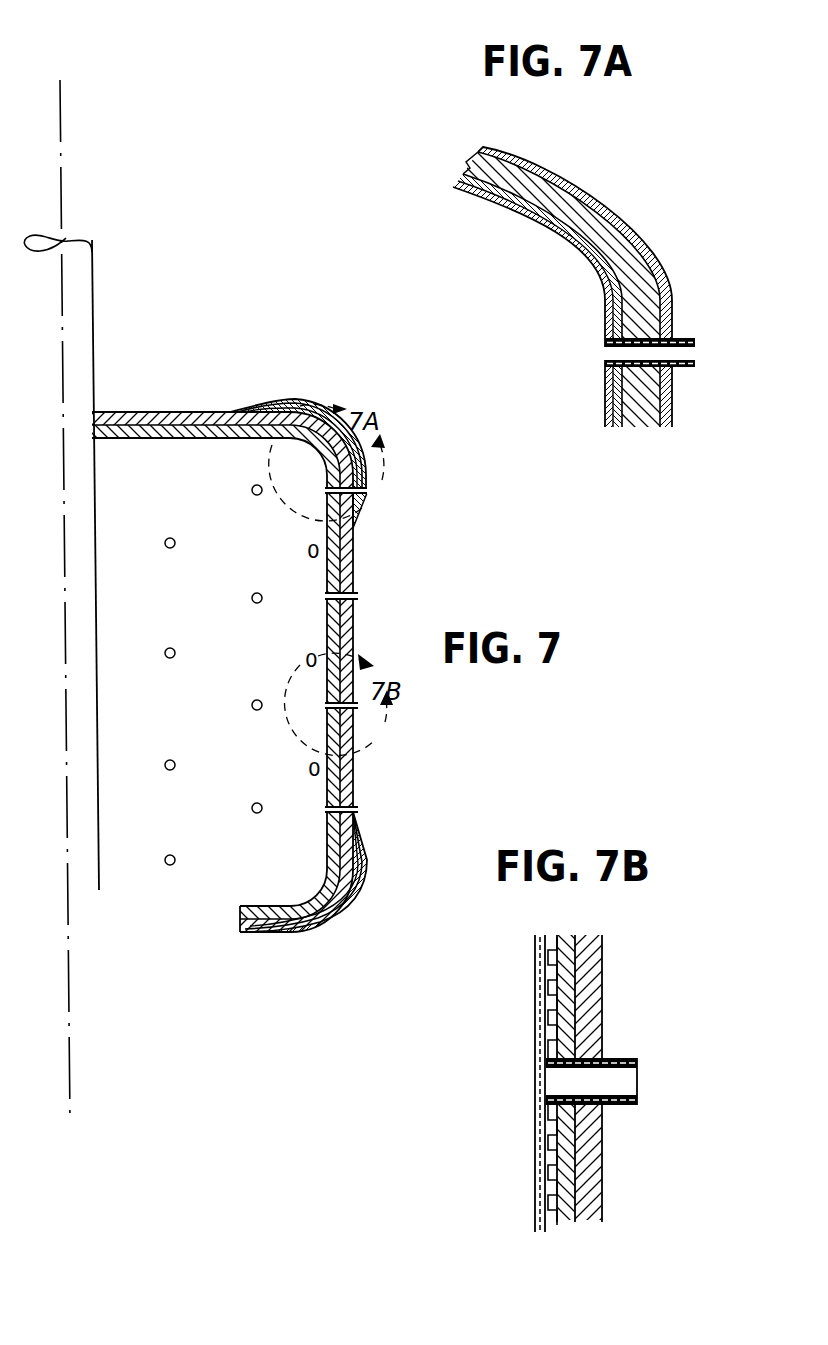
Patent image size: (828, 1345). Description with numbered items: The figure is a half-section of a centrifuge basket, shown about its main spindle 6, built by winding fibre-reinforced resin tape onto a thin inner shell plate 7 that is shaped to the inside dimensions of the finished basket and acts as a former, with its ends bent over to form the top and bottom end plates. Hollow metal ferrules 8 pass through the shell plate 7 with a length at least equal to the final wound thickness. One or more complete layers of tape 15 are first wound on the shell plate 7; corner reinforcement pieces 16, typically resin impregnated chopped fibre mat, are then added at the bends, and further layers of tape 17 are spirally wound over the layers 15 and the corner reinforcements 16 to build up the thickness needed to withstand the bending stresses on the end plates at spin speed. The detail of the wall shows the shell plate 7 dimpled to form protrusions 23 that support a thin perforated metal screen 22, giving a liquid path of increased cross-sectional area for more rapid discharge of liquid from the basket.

In FIG. 7, the main spindle 6 is at (80, 591).
In FIG. 7, the inner shell plate 7 is at (328, 786).
In FIG. 7A, the inner shell plate 7 is at (500, 198).
In FIG. 7B, the inner shell plate 7 is at (545, 1030).
In FIG. 7, the hollow metal ferrule 8 is at (355, 593).
In FIG. 7A, the hollow metal ferrule 8 is at (690, 333).
In FIG. 7B, the hollow metal ferrule 8 is at (628, 1058).
In FIG. 7, the layers of tape 15 is at (298, 452).
In FIG. 7A, the layers of tape 15 is at (608, 275).
In FIG. 7B, the layers of tape 15 is at (540, 992).
In FIG. 7, the corner reinforcement piece 16 is at (373, 485).
In FIG. 7A, the corner reinforcement piece 16 is at (640, 263).
In FIG. 7, the further layers of tape 17 is at (362, 465).
In FIG. 7A, the further layers of tape 17 is at (622, 215).
In FIG. 7B, the further layers of tape 17 is at (592, 980).
In FIG. 7B, the perforated metal screen 22 is at (545, 1186).
In FIG. 7B, the protrusion 23 is at (545, 1138).